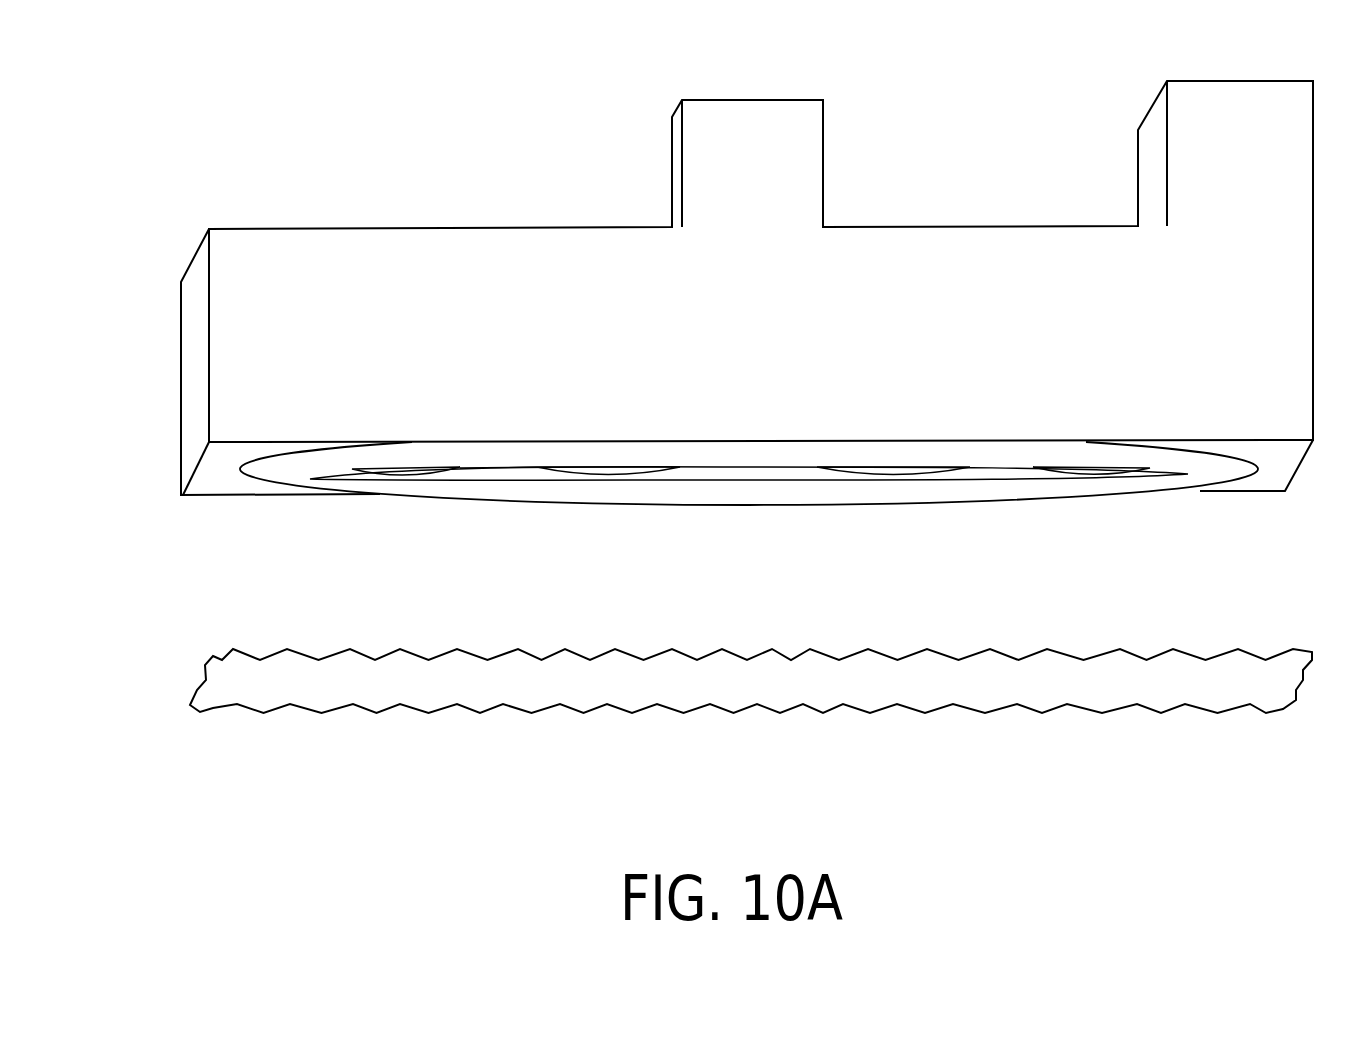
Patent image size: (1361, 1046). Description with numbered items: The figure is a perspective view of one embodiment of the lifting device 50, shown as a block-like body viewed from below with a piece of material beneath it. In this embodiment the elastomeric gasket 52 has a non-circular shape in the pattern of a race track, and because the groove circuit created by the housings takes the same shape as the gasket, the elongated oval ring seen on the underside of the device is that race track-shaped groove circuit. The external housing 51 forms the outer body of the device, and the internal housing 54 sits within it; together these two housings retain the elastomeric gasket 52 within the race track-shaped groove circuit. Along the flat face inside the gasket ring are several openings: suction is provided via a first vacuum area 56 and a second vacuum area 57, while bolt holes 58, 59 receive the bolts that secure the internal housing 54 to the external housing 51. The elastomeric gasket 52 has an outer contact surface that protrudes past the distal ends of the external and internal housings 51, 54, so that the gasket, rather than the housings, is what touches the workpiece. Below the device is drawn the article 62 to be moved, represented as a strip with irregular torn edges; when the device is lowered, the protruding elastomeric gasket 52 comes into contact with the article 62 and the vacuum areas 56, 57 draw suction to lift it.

The lifting device 50 is at (140, 157).
The external housing 51 is at (193, 365).
The elastomeric gasket 52 is at (273, 473).
The internal housing 54 is at (497, 472).
The first vacuum area 56 is at (410, 472).
The second vacuum area 57 is at (1085, 470).
The bolt hole 58 is at (603, 472).
The bolt hole 59 is at (892, 472).
The article 62 is at (354, 700).